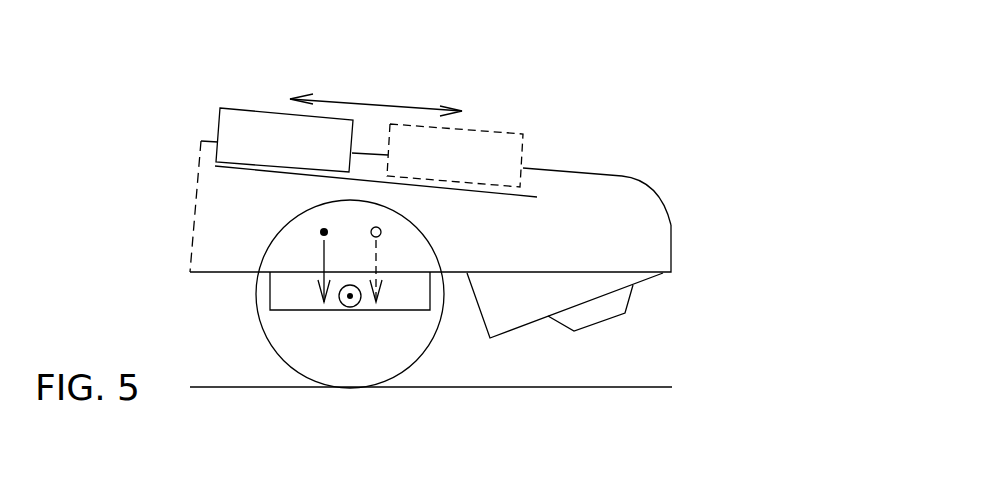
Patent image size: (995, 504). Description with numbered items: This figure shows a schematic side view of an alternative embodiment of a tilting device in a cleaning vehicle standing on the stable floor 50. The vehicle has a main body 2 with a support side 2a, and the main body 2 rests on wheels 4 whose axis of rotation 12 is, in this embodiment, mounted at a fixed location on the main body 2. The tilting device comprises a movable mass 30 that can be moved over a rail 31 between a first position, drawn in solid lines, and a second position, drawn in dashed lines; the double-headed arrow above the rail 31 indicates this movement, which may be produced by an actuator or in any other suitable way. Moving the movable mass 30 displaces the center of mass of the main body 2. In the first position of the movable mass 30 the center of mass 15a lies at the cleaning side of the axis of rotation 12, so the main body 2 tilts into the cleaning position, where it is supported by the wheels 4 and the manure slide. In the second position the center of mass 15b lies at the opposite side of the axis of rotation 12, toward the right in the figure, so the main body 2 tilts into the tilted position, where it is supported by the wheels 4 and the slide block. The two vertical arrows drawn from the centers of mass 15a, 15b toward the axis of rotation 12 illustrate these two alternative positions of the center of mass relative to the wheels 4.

The main body 2 is at (570, 190).
The support side 2a is at (622, 176).
The wheels 4 is at (302, 337).
The axis of rotation 12 is at (352, 298).
The center of mass 15a is at (324, 232).
The center of mass 15b is at (382, 232).
The movable mass 30 is at (264, 144).
The rail 31 is at (253, 173).
The stable floor 50 is at (628, 388).